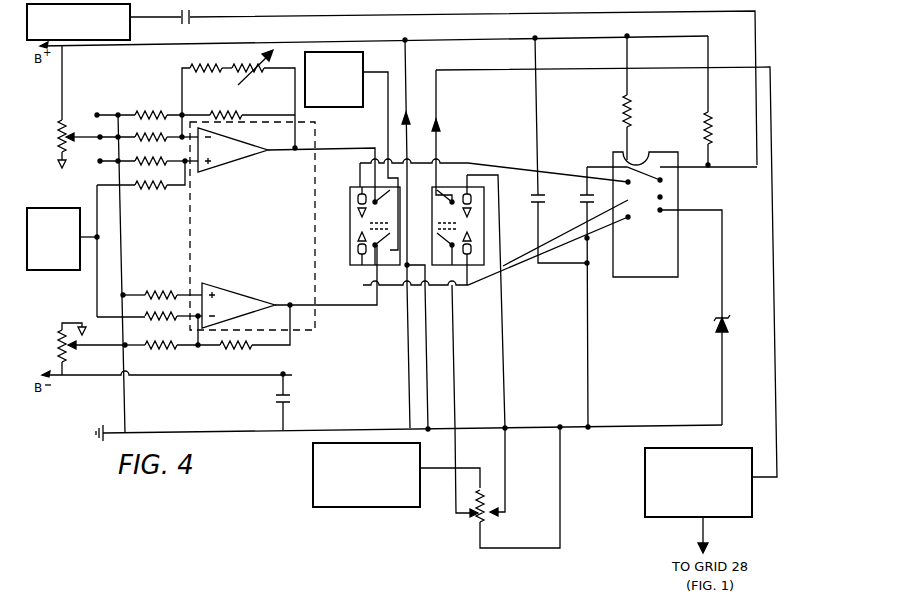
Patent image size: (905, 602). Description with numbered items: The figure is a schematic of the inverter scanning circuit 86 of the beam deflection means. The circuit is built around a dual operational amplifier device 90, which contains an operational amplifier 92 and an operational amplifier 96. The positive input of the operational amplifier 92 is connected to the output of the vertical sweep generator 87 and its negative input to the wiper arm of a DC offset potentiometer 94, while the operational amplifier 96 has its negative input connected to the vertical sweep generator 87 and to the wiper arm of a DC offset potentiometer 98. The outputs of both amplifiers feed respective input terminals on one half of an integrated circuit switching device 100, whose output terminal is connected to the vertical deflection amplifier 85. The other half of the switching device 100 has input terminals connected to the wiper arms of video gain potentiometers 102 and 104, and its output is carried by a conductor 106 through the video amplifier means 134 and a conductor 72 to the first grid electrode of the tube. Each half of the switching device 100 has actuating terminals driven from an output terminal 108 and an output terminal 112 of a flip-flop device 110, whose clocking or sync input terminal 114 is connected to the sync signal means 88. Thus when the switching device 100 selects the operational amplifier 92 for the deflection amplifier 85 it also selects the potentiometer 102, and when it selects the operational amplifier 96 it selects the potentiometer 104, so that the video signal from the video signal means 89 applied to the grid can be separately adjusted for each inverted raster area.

The conductor 72 is at (700, 524).
The vertical deflection amplifier 85 is at (350, 108).
The inverter scanning circuit 86 is at (525, 12).
The vertical sweep generator 87 is at (56, 271).
The sync signal means 88 is at (130, 12).
The video signal means 89 is at (383, 508).
The dual operational amplifier device 90 is at (318, 318).
The operational amplifier 92 is at (235, 165).
The DC offset potentiometer 94 is at (58, 138).
The operational amplifier 96 is at (230, 292).
The DC offset potentiometer 98 is at (58, 343).
The integrated circuit switching device 100 is at (348, 240).
The video gain potentiometer 102 is at (493, 520).
The video gain potentiometer 104 is at (470, 517).
The conductor 106 is at (436, 100).
The output terminal 108 is at (642, 185).
The flip-flop device 110 is at (657, 277).
The output terminal 112 is at (628, 200).
The clocking or sync input terminal 114 is at (664, 167).
The video amplifier means 134 is at (645, 500).